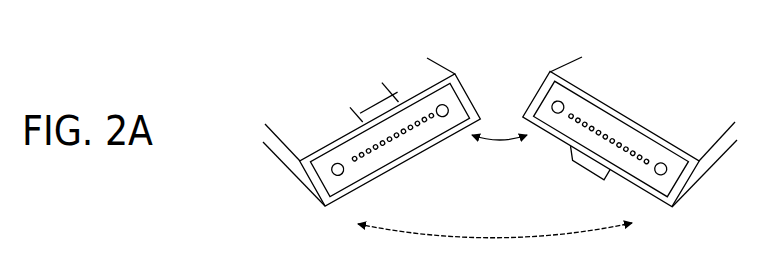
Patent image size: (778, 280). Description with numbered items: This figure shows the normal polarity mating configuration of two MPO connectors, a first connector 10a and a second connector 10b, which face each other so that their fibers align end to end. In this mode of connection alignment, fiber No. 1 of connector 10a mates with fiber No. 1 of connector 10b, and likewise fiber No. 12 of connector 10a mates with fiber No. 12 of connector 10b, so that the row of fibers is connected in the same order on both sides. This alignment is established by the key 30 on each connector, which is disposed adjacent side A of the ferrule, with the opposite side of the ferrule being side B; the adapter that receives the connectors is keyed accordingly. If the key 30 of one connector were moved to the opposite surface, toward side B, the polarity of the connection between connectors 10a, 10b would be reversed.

The connector 10a is at (459, 71).
The connector 10b is at (541, 71).
The fiber No. 1 is at (439, 123).
The fiber No. 12 is at (358, 166).
The key 30 is at (375, 105).
The side A is at (328, 145).
The side B is at (347, 192).